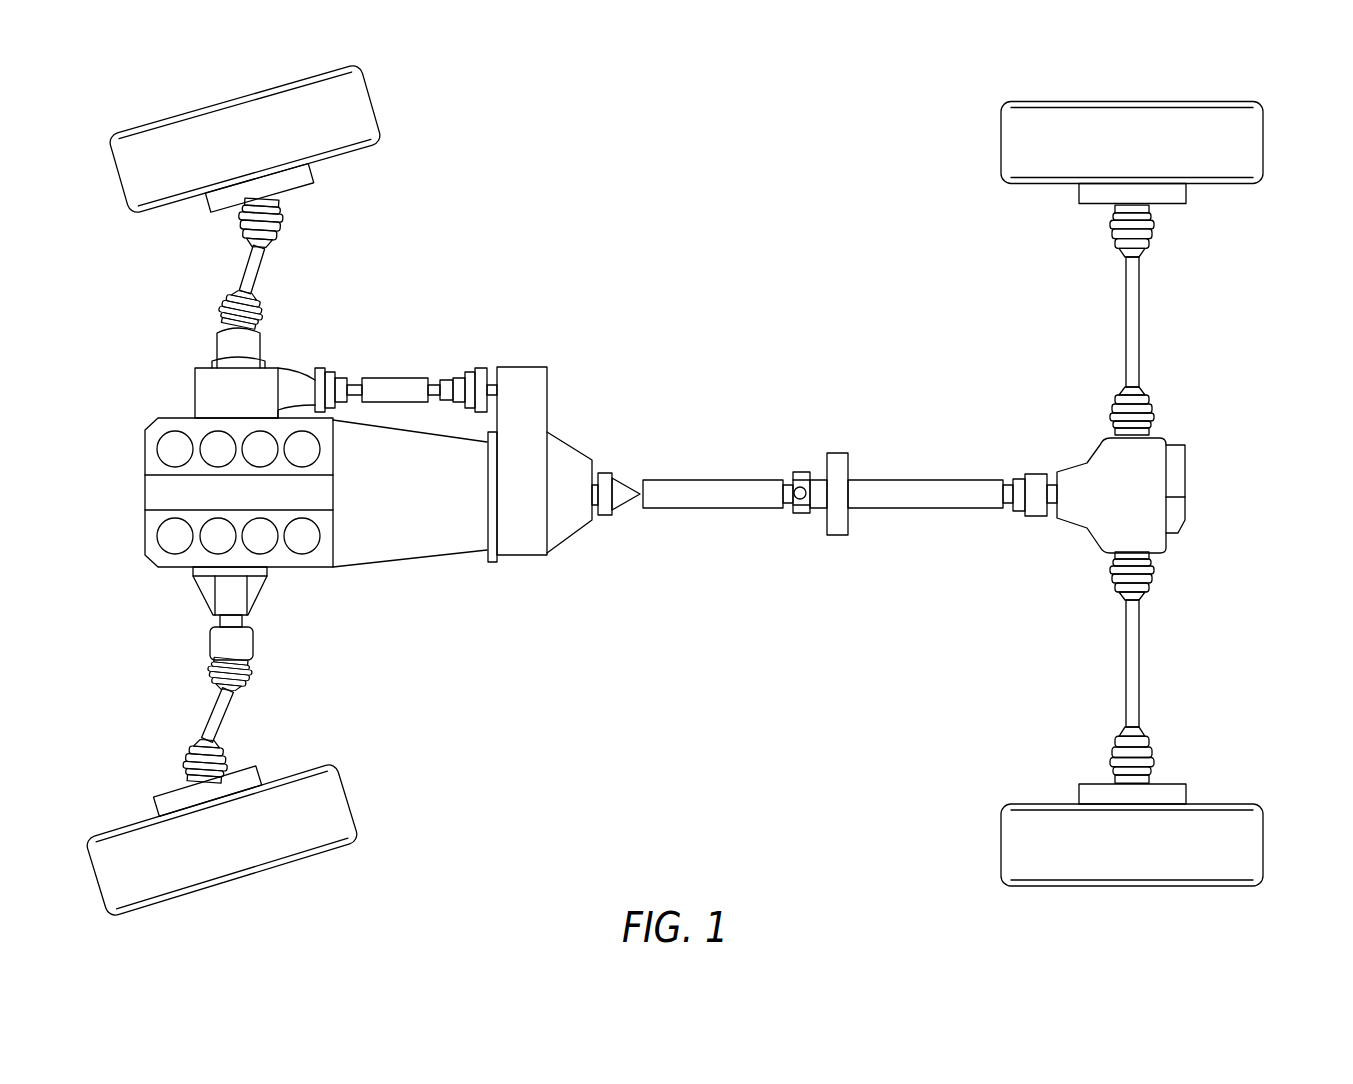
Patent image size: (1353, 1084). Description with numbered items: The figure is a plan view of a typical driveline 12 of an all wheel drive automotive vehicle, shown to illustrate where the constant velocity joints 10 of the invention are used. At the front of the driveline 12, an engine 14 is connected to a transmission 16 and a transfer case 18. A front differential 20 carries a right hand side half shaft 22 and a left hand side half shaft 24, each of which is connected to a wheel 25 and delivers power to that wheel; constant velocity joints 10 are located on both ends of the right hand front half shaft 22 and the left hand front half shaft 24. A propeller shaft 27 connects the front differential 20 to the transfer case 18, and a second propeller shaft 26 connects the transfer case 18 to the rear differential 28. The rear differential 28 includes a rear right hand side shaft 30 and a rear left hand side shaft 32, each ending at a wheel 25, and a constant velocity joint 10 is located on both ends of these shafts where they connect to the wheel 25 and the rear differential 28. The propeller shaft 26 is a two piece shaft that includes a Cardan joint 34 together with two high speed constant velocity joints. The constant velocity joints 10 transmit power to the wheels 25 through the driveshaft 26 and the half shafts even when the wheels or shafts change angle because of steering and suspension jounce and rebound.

The constant velocity joint 10 is at (282, 236).
The driveline 12 is at (697, 292).
The engine 14 is at (166, 493).
The transmission 16 is at (404, 542).
The transfer case 18 is at (523, 545).
The front differential 20 is at (262, 388).
The right hand side half shaft 22 is at (252, 270).
The left hand side half shaft 24 is at (220, 713).
The wheel 25 is at (360, 114).
The propeller shaft 26 is at (716, 508).
The propeller shaft 27 is at (395, 385).
The rear differential 28 is at (1138, 503).
The rear right hand side shaft 30 is at (1135, 297).
The rear left hand side shaft 32 is at (1135, 678).
The Cardan joint 34 is at (801, 471).